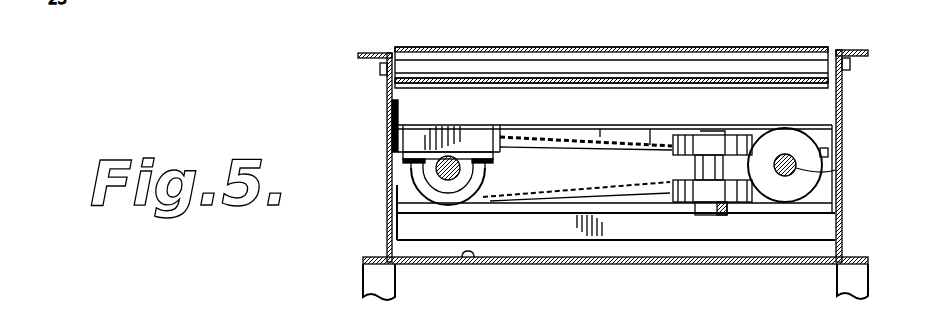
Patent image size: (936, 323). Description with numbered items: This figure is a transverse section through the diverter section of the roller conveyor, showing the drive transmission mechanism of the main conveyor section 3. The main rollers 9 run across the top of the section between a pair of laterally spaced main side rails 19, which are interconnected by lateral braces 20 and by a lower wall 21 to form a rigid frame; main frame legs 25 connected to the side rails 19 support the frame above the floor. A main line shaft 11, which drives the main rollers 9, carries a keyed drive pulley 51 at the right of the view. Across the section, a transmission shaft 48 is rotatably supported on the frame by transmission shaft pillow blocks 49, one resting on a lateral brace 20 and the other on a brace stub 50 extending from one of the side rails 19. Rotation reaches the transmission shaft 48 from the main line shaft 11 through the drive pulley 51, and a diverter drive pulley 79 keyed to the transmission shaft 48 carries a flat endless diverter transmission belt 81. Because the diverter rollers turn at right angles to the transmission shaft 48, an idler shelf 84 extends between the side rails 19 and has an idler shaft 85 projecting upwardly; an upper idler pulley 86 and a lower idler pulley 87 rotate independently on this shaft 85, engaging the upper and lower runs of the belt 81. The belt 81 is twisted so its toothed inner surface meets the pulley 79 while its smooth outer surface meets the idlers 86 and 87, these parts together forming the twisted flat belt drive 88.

The main conveyor section 3 is at (362, 261).
The main rollers 9 is at (748, 48).
The main line shaft 11 is at (845, 170).
The main side rails 19 is at (387, 170).
The lateral braces 20 is at (582, 130).
The lower wall 21 is at (470, 265).
The main frame legs 25 is at (372, 282).
The transmission shaft 48 is at (452, 152).
The transmission shaft pillow blocks 49 is at (435, 178).
The brace stub 50 is at (498, 134).
The drive pulley 51 is at (808, 193).
The diverter drive pulley 79 is at (488, 178).
The diverter transmission belt 81 is at (643, 142).
The idler shelf 84 is at (556, 232).
The idler shaft 85 is at (710, 170).
The upper idler pulley 86 is at (740, 135).
The lower idler pulley 87 is at (745, 202).
The twisted flat belt drive 88 is at (598, 150).